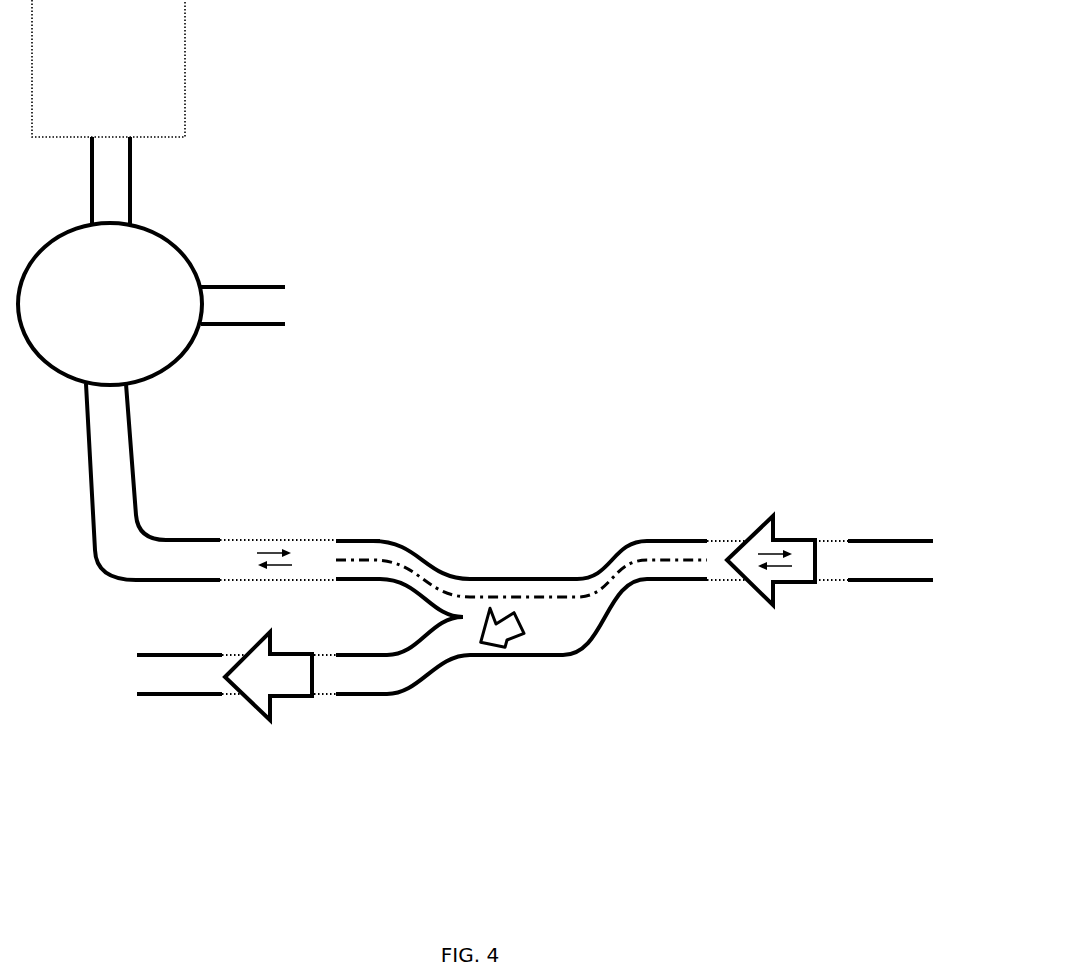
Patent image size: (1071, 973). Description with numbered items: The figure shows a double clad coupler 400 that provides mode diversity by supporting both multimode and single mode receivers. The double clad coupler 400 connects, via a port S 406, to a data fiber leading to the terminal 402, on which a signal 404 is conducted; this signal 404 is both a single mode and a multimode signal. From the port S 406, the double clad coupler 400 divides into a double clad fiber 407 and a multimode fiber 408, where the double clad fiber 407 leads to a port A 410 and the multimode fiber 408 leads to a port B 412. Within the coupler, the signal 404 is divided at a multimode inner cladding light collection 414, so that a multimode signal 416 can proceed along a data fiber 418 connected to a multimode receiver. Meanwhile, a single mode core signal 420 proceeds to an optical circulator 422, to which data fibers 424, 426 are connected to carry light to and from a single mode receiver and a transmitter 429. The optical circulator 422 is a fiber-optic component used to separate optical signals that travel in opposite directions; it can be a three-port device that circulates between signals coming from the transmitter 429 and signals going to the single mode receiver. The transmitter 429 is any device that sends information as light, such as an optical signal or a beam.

The double clad coupler 400 is at (664, 380).
The terminal 402 is at (867, 578).
The signal 404 is at (775, 520).
The port S 406 is at (687, 540).
The double clad fiber 407 is at (435, 565).
The multimode fiber 408 is at (400, 692).
The port A 410 is at (343, 540).
The port B 412 is at (338, 655).
The multimode inner cladding light collection 414 is at (518, 645).
The multimode signal 416 is at (272, 718).
The data fiber 418 is at (155, 695).
The single mode core signal 420 is at (263, 537).
The optical circulator 422 is at (110, 304).
The data fiber 424 is at (255, 285).
The data fiber 426 is at (132, 197).
The transmitter 429 is at (108, 68).